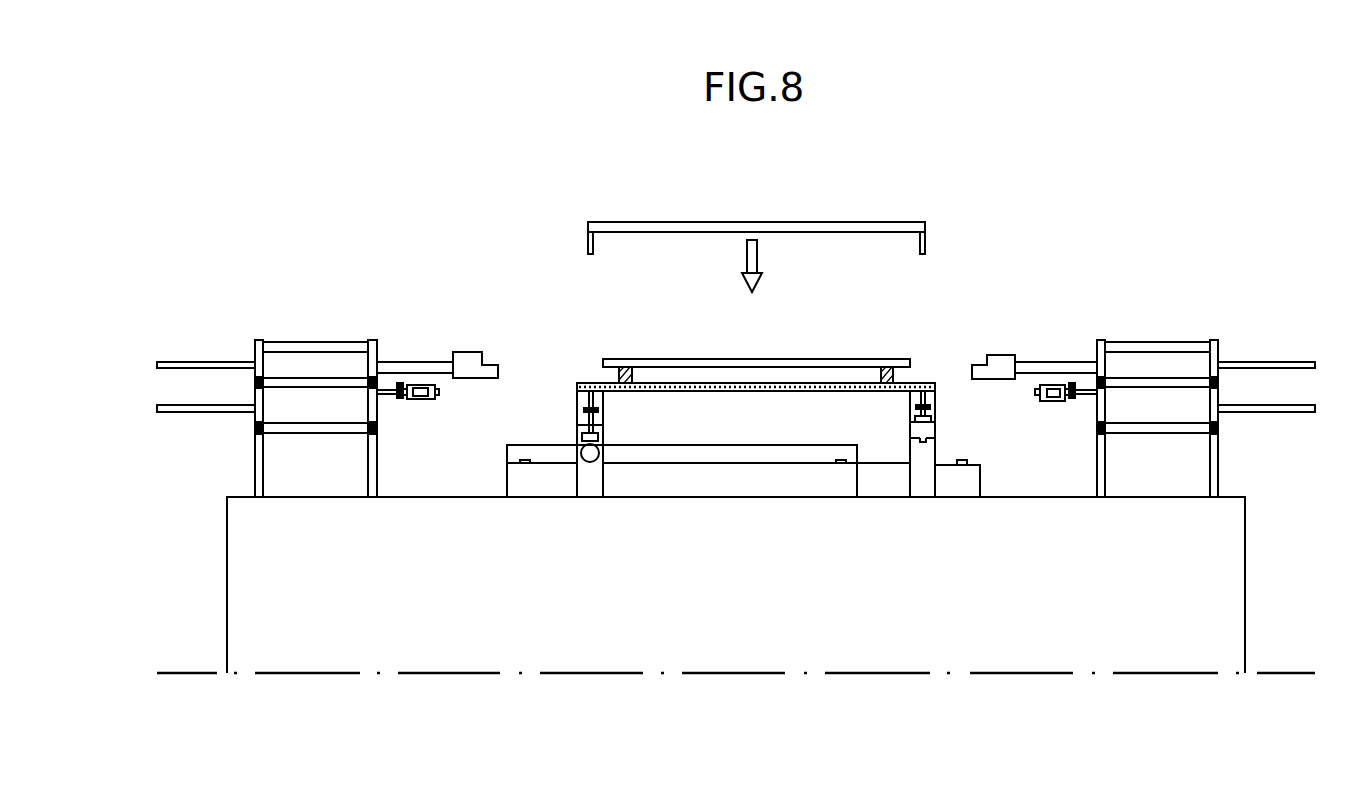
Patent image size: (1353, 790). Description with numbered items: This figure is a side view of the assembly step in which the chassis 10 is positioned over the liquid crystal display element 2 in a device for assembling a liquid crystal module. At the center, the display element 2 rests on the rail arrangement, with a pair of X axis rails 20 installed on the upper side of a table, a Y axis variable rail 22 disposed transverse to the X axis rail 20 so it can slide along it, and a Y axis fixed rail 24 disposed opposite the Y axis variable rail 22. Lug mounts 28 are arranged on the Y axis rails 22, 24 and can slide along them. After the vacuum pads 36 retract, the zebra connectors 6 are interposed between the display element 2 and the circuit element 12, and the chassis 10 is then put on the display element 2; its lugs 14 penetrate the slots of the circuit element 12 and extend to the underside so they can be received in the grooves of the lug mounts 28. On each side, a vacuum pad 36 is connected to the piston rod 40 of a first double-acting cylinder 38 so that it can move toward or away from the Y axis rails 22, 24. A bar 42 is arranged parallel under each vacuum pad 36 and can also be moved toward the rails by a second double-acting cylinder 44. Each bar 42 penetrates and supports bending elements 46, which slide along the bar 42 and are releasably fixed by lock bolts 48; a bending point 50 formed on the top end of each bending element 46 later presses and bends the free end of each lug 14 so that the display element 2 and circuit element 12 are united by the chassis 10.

The liquid crystal display element 2 is at (803, 359).
The zebra connector 6 is at (618, 373).
The chassis 10 is at (753, 222).
The circuit element 12 is at (707, 383).
The lug 14 is at (588, 240).
The X axis rail 20 is at (700, 490).
The Y axis variable rail 22 is at (581, 466).
The Y axis fixed rail 24 is at (945, 490).
The lug mount 28 is at (577, 428).
The vacuum pad 36 is at (471, 355).
The first double-acting cylinder 38 is at (315, 358).
The piston rod 40 is at (428, 362).
The bar 42 is at (422, 398).
The second double-acting cylinder 44 is at (282, 410).
The bending element 46 is at (418, 399).
The lock bolt 48 is at (399, 387).
The bending point 50 is at (440, 393).